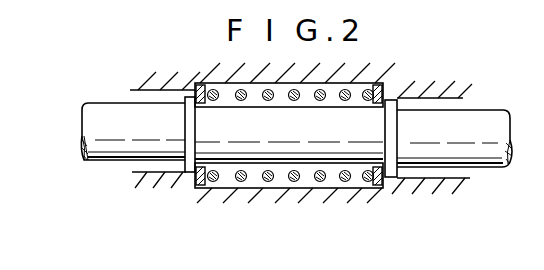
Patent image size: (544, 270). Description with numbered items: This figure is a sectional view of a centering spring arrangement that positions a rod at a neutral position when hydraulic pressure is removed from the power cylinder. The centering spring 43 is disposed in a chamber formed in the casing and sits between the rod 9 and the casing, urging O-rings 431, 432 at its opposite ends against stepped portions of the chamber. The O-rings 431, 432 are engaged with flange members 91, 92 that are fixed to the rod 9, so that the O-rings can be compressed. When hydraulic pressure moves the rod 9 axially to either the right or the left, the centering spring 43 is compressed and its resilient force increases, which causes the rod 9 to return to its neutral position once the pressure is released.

The rod 9 is at (490, 152).
The flange member 91 is at (184, 142).
The flange member 92 is at (399, 152).
The centering spring 43 is at (286, 189).
The O-ring 431 is at (190, 186).
The O-ring 432 is at (376, 186).